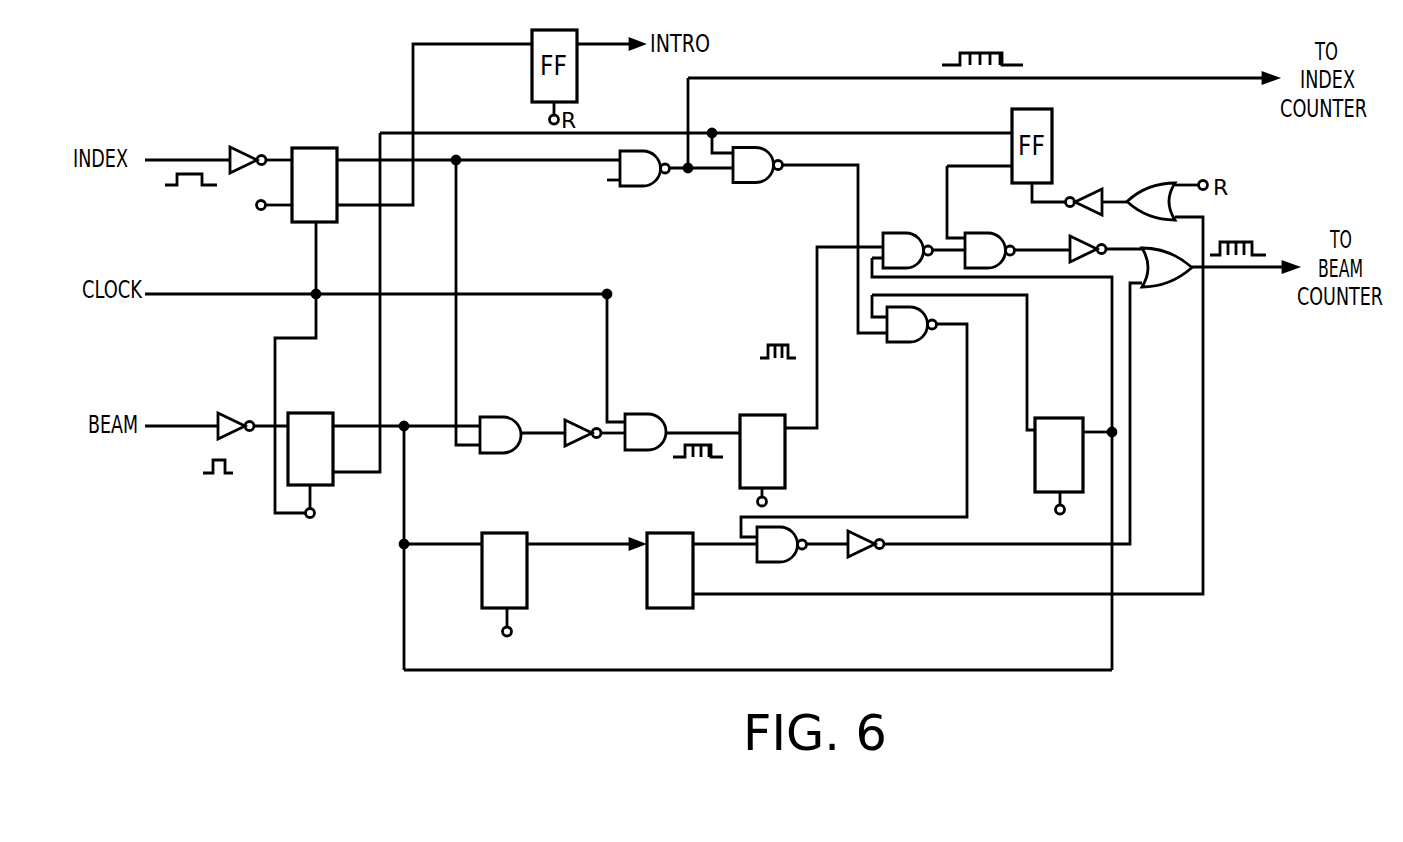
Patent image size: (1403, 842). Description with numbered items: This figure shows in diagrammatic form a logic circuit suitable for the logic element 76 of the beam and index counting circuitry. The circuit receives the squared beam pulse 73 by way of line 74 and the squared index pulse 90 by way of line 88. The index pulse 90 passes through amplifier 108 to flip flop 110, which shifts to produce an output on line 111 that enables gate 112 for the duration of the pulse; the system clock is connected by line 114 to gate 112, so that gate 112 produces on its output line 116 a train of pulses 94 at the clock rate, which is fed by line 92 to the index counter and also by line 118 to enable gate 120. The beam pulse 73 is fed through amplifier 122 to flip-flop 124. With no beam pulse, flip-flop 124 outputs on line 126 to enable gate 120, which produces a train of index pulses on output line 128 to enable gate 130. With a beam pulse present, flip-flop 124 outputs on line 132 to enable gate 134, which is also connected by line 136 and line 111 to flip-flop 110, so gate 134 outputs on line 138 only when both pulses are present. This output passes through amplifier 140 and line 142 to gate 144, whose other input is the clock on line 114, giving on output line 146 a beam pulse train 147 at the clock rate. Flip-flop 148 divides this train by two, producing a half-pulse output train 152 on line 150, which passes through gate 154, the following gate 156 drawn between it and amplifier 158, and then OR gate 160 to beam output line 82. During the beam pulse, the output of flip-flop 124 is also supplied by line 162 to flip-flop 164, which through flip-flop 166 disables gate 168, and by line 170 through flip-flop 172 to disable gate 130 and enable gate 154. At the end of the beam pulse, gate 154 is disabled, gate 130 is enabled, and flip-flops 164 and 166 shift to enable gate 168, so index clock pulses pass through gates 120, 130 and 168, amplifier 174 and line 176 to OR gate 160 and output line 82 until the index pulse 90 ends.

The beam pulse 73 is at (228, 465).
The line 74 is at (162, 430).
The logic element 76 is at (355, 652).
The beam output line 82 is at (1228, 272).
The line 88 is at (175, 160).
The index pulse 90 is at (166, 185).
The line 92 is at (1140, 78).
The train of pulses 94 is at (995, 50).
The amplifier 108 is at (247, 147).
The flip flop 110 is at (318, 148).
The output line 111 is at (437, 160).
The gate 112 is at (638, 175).
The line 114 is at (190, 294).
The output line 116 is at (678, 173).
The line 118 is at (718, 170).
The gate 120 is at (770, 153).
The amplifier 122 is at (226, 392).
The flip-flop 124 is at (318, 413).
The line 126 is at (347, 472).
The output line 128 is at (858, 198).
The gate 130 is at (908, 342).
The line 132 is at (392, 392).
The gate 134 is at (505, 453).
The line 136 is at (458, 262).
The line 138 is at (533, 435).
The amplifier 140 is at (590, 436).
The line 142 is at (612, 435).
The gate 144 is at (655, 414).
The output line 146 is at (722, 433).
The beam pulse train 147 is at (715, 450).
The flip-flop 148 is at (788, 462).
The line 150 is at (817, 393).
The half-pulse output train 152 is at (764, 348).
The gate 154 is at (912, 210).
The NAND gate 156 is at (990, 235).
The amplifier 158 is at (1075, 240).
The OR gate 160 is at (1152, 283).
The line 162 is at (432, 544).
The flip-flop 164 is at (520, 590).
The flip-flop 166 is at (688, 582).
The gate 168 is at (777, 550).
The line 170 is at (445, 672).
The flip-flop 172 is at (1040, 488).
The amplifier 174 is at (868, 548).
The line 176 is at (1030, 548).